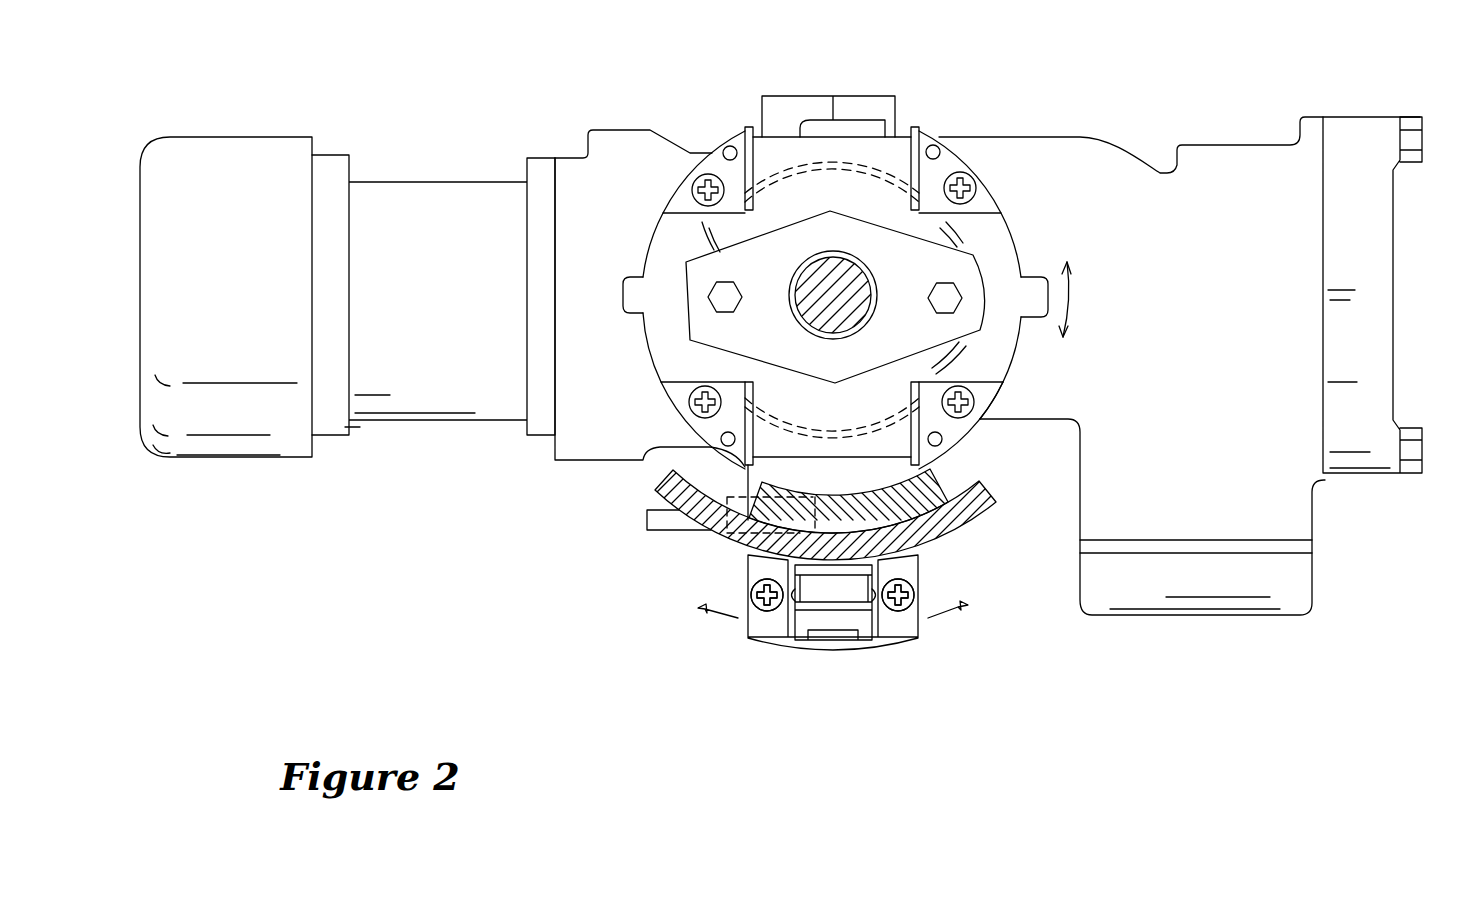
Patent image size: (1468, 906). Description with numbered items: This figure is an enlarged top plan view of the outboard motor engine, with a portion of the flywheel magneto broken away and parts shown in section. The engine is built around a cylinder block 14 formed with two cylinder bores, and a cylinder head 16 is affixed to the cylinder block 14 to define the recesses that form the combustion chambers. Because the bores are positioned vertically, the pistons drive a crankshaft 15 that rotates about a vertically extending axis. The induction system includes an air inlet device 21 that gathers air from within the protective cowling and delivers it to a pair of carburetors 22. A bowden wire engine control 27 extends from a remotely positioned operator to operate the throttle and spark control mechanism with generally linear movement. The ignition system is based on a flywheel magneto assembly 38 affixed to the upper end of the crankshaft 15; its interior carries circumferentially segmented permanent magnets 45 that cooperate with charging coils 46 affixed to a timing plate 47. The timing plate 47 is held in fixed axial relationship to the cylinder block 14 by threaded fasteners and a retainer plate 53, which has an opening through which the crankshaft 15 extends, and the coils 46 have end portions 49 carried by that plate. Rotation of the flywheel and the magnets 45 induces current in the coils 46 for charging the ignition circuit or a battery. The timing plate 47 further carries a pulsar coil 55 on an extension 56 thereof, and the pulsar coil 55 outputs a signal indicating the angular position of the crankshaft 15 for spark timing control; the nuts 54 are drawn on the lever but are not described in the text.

The cylinder block 14 is at (1120, 163).
The crankshaft 15 is at (847, 273).
The cylinder head 16 is at (1378, 213).
The air inlet device 21 is at (218, 445).
The carburetors 22 is at (437, 398).
The bowden wire engine control 27 is at (655, 528).
The flywheel magneto assembly 38 is at (990, 503).
The permanent magnets 45 is at (948, 495).
The charging coils 46 is at (905, 158).
The timing plate 47 is at (1023, 333).
The end portions 49 is at (714, 156).
The retainer plate 53 is at (1037, 252).
The hex nuts 54 is at (713, 300).
The pulsar coil 55 is at (842, 620).
The extension 56 is at (817, 647).